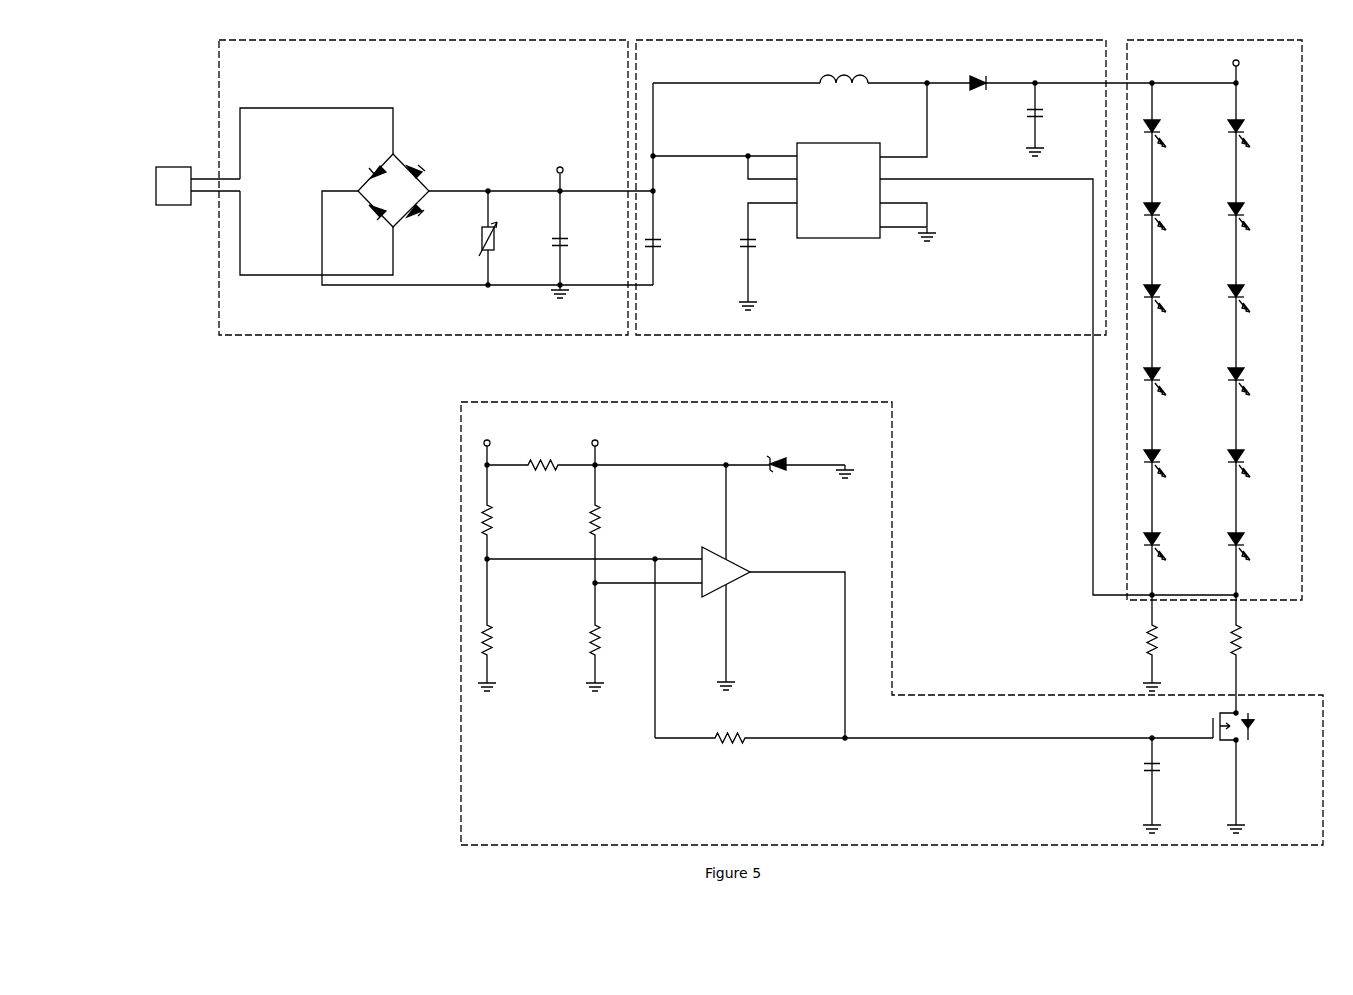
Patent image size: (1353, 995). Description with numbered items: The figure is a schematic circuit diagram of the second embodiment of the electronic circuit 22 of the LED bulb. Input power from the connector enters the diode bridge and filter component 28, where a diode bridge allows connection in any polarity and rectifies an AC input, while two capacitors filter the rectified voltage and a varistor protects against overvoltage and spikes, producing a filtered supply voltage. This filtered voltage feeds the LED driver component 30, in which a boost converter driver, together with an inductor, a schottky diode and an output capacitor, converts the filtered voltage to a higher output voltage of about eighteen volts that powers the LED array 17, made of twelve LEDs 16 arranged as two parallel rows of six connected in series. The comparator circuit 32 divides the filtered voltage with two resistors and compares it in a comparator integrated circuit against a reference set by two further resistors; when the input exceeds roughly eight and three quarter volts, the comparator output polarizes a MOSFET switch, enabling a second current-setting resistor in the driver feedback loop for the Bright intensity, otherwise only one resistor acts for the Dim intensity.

The electronic circuit 22 is at (290, 441).
The diode bridge and filter component 28 is at (318, 335).
The LED driver component 30 is at (1003, 335).
The LED array 17 is at (1302, 233).
The LEDs 16 is at (1143, 539).
The comparator circuit 32 is at (458, 547).